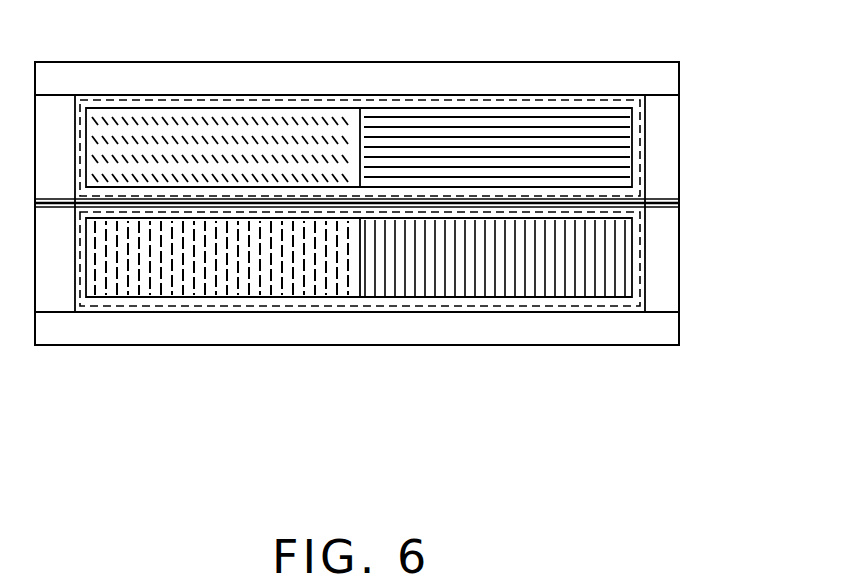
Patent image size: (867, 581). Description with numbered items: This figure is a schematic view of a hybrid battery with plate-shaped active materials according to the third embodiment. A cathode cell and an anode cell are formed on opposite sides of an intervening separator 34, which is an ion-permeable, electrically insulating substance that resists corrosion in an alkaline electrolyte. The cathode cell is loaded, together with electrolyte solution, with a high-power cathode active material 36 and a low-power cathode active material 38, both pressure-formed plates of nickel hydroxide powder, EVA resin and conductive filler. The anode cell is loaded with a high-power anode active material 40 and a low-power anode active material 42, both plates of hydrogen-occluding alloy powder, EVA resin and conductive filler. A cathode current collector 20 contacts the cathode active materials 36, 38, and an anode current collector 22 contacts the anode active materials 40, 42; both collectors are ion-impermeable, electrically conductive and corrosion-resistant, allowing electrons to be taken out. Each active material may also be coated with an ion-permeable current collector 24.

The cathode current collector 20 is at (200, 61).
The anode current collector 22 is at (548, 345).
The ion-permeable current collector 24 is at (641, 145).
The separator 34 is at (676, 202).
The high-power cathode active material 36 is at (265, 130).
The low-power cathode active material 38 is at (536, 128).
The high-power anode active material 40 is at (233, 278).
The low-power anode active material 42 is at (480, 272).